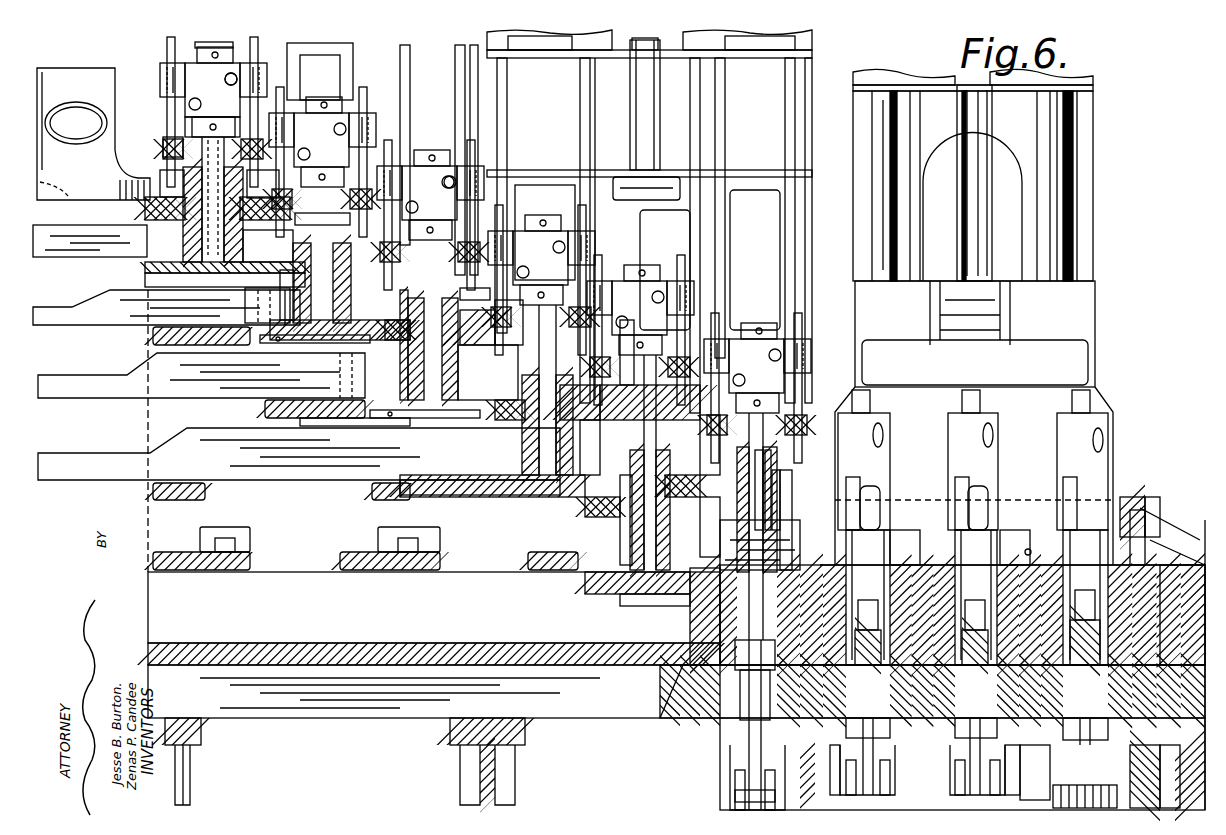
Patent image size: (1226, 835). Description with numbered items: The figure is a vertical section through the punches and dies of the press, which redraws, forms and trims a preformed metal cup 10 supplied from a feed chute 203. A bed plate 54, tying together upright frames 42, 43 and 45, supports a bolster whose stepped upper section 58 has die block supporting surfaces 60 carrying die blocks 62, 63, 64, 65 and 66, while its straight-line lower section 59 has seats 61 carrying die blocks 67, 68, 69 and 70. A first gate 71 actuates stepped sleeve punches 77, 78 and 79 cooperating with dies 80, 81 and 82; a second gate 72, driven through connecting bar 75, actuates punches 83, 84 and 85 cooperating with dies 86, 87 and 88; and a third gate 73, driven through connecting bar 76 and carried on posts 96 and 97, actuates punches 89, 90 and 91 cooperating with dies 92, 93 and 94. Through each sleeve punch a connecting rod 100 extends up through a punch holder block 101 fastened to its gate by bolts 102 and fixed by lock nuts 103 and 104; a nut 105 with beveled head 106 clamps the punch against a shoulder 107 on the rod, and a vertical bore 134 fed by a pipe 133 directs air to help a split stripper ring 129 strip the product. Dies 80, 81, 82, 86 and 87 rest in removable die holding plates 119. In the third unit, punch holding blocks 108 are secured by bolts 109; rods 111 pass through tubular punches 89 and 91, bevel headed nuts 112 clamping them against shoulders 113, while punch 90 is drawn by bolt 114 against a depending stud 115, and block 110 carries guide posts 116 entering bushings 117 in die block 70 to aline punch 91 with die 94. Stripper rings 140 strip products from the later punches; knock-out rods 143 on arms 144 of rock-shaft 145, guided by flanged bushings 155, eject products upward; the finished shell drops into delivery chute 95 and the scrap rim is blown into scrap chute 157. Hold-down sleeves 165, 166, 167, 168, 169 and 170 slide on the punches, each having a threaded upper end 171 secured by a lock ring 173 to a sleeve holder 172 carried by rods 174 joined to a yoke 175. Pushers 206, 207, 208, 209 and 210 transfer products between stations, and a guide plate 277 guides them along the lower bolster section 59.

The preformed metal cup 10 is at (70, 104).
The feed chute 203 is at (95, 75).
The product pusher 206 is at (76, 123).
The product pusher 207 is at (75, 255).
The product pusher 208 is at (75, 316).
The product pusher 209 is at (87, 390).
The product pusher 210 is at (90, 470).
The nut 105 is at (200, 292).
The beveled head 106 is at (190, 292).
The upper bolster section 58 is at (168, 422).
The die 80 is at (146, 212).
The sleeve 165 is at (263, 184).
The die block 63 is at (150, 267).
The die block 64 is at (360, 352).
The die block supporting surface 60 is at (280, 345).
The lower bolster section 59 is at (315, 540).
The bed plate 54 is at (405, 665).
The frame 42 is at (203, 735).
The frame 43 is at (455, 735).
The punch holder block 101 is at (198, 90).
The lock nut 104 is at (198, 50).
The bolt 102 is at (224, 79).
The connecting rod 100 is at (200, 128).
The die block 62 is at (155, 185).
The shoulder 107 is at (518, 383).
The punch 77 is at (238, 245).
The pipe 133 is at (340, 115).
The first gate 71 is at (405, 40).
The lock nut 103 is at (385, 148).
The vertical bore 134 is at (530, 240).
The sleeve 166 is at (345, 224).
The punch 78 is at (350, 300).
The die 81 is at (265, 290).
The die holding plate 119 is at (405, 330).
The sleeve 167 is at (477, 289).
The die 82 is at (491, 322).
The punch 79 is at (450, 362).
The punch 83 is at (560, 440).
The sleeve 168 is at (560, 348).
The die 86 is at (575, 415).
The sleeve 169 is at (665, 421).
The die 87 is at (683, 478).
The die block 65 is at (480, 425).
The die block 66 is at (590, 498).
The split ring 129 is at (628, 510).
The punch 84 is at (665, 525).
The punch 85 is at (785, 555).
The stripper ring 140 is at (778, 500).
The yoke 175 is at (748, 50).
The rod 174 is at (580, 110).
The connecting bar 75 is at (652, 125).
The second gate 72 is at (665, 190).
The lock ring 173 is at (790, 410).
The threaded upper end portion 171 is at (780, 440).
The sleeve holder 172 is at (780, 460).
The sleeve 170 is at (795, 480).
The bolt 109 is at (982, 435).
The die block 67 is at (700, 606).
The guide plate 277 is at (615, 593).
The die 88 is at (700, 590).
The die block seat 61 is at (720, 655).
The knock-out rod 143 is at (745, 740).
The arm 144 is at (740, 800).
The vertical post 96 is at (878, 140).
The connecting bar 76 is at (965, 221).
The vertical post 97 is at (1062, 153).
The third gate 73 is at (1052, 330).
The punch holding block 108 is at (950, 460).
The shoulder 113 is at (880, 462).
The bolt 114 is at (952, 490).
The block 110 is at (1060, 452).
The rod 111 is at (880, 515).
The depending stud 115 is at (993, 515).
The die 92 is at (900, 530).
The die 93 is at (1032, 530).
The punch 89 is at (890, 565).
The punch 90 is at (1000, 565).
The cut-off punch 91 is at (1110, 560).
The guide post 116 is at (1137, 510).
The die 94 is at (1150, 500).
The bushing 117 is at (1160, 530).
The die block 70 is at (1150, 565).
The scrap chute 157 is at (1177, 561).
The die block 68 is at (888, 760).
The flanged bushing 155 is at (898, 720).
The die block 69 is at (985, 765).
The rock-shaft 145 is at (998, 765).
The delivery chute 95 is at (1070, 760).
The bevel headed nut 112 is at (1070, 728).
The frame 45 is at (1060, 770).